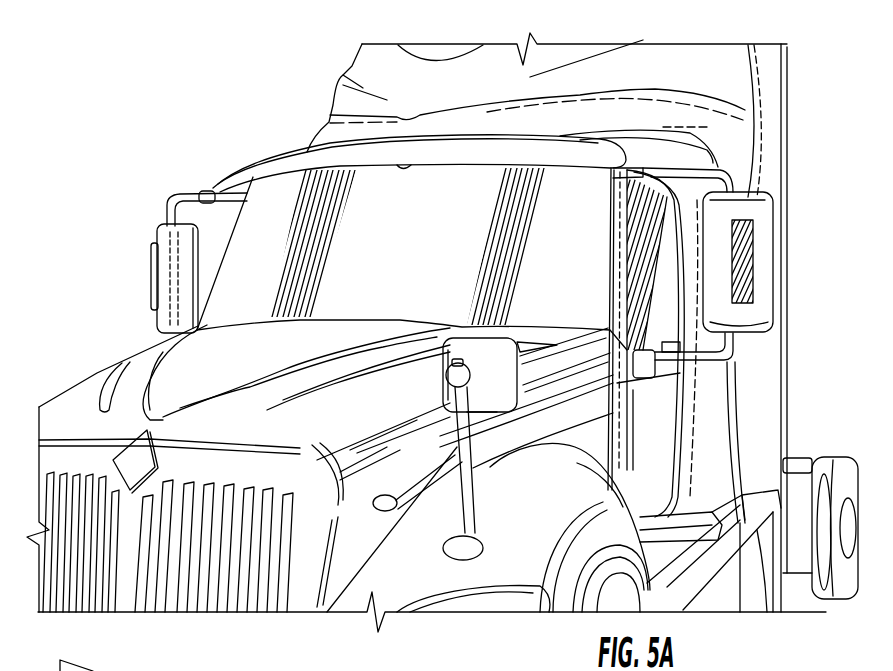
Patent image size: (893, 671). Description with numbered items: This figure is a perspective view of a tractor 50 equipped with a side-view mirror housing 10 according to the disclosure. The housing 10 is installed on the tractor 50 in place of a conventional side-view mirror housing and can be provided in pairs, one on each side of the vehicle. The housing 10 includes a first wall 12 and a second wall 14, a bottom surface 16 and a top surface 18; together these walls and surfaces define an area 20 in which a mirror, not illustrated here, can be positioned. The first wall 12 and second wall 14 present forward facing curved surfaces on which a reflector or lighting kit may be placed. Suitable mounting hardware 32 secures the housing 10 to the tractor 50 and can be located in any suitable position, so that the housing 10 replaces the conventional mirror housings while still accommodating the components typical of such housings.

The mirror housing 10 is at (138, 275).
The first wall 12 is at (187, 288).
The second wall 14 is at (760, 218).
The bottom surface 16 is at (747, 329).
The top surface 18 is at (753, 182).
The area 20 is at (170, 212).
The mounting hardware 32 is at (209, 190).
The tractor 50 is at (246, 148).